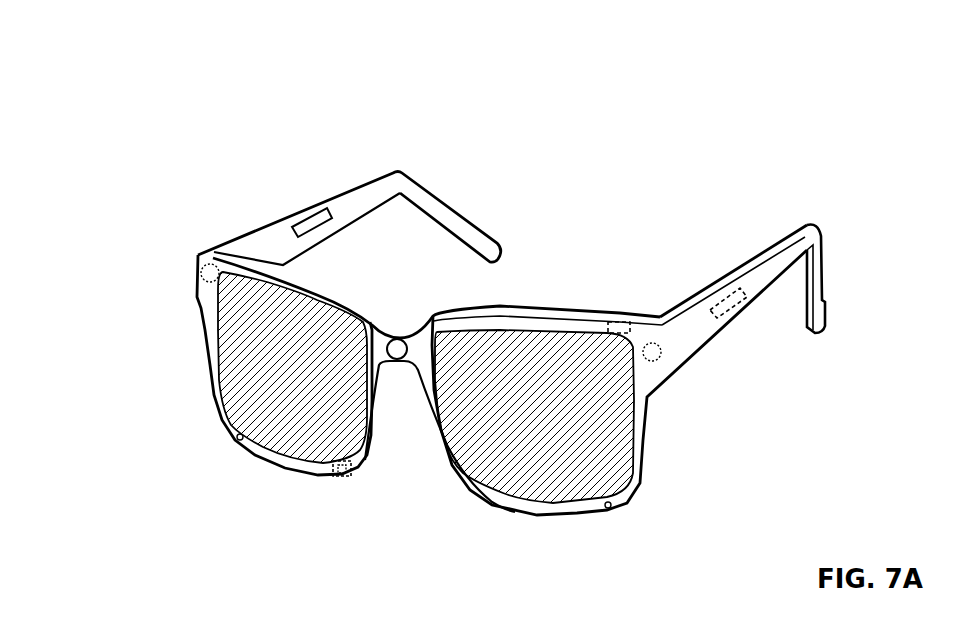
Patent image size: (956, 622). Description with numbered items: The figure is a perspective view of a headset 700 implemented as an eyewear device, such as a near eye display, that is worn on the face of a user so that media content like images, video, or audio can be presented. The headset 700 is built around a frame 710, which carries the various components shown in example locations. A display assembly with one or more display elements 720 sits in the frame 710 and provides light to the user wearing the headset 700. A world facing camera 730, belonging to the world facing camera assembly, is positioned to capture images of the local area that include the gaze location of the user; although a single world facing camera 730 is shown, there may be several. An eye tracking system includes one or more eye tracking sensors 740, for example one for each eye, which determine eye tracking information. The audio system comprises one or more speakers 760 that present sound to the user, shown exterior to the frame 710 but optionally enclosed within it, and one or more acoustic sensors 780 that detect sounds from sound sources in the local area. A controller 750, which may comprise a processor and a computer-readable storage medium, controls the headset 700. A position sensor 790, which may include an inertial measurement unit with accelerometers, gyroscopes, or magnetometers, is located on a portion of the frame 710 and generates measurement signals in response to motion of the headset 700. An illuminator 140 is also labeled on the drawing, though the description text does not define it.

The headset 700 is at (160, 57).
The frame 710 is at (811, 222).
The display element 720 is at (268, 360).
The world facing camera 730 is at (398, 355).
The eye tracking sensor 740 is at (661, 352).
The controller 750 is at (609, 322).
The speaker 760 is at (303, 216).
The acoustic sensor 780 is at (236, 439).
The position sensor 790 is at (340, 478).
The illuminator 140 is at (332, 289).